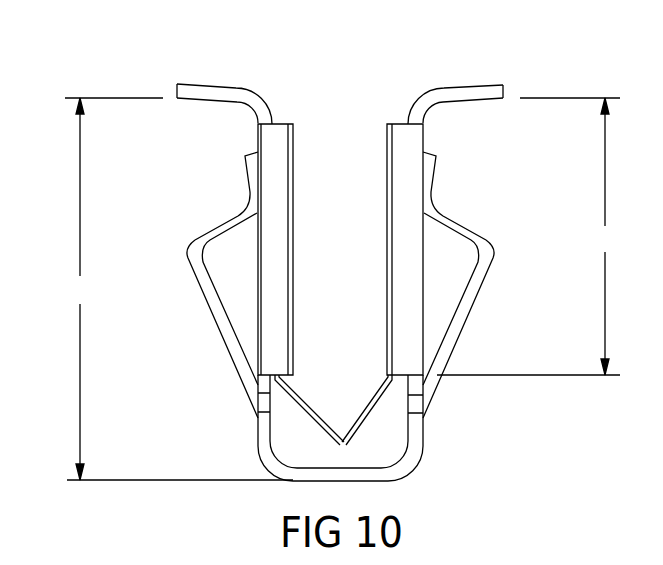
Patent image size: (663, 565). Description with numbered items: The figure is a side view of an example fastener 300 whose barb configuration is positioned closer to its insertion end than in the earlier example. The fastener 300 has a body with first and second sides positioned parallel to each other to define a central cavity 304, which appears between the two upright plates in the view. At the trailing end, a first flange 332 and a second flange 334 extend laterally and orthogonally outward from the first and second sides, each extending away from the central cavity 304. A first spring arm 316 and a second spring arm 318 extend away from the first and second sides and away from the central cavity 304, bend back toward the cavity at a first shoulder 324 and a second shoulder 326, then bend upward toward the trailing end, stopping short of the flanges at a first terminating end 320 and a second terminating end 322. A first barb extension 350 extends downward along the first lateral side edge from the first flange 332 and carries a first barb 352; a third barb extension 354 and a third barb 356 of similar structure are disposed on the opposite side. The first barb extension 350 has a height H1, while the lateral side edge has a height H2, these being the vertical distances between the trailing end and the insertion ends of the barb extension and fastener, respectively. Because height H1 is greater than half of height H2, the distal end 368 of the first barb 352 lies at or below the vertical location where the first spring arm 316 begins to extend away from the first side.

The fastener 300 is at (120, 65).
The central cavity 304 is at (340, 136).
The first spring arm 316 is at (195, 273).
The second spring arm 318 is at (480, 273).
The first terminating end 320 is at (253, 152).
The second terminating end 322 is at (437, 150).
The first shoulder 324 is at (197, 243).
The second shoulder 326 is at (480, 243).
The first flange 332 is at (195, 86).
The second flange 334 is at (473, 93).
The first barb extension 350 is at (278, 306).
The first barb 352 is at (303, 405).
The third barb extension 354 is at (405, 347).
The third barb 356 is at (376, 400).
The distal end 368 is at (334, 446).
The height of the first barb extension H1 is at (528, 236).
The height of the first lateral side edge H2 is at (179, 289).